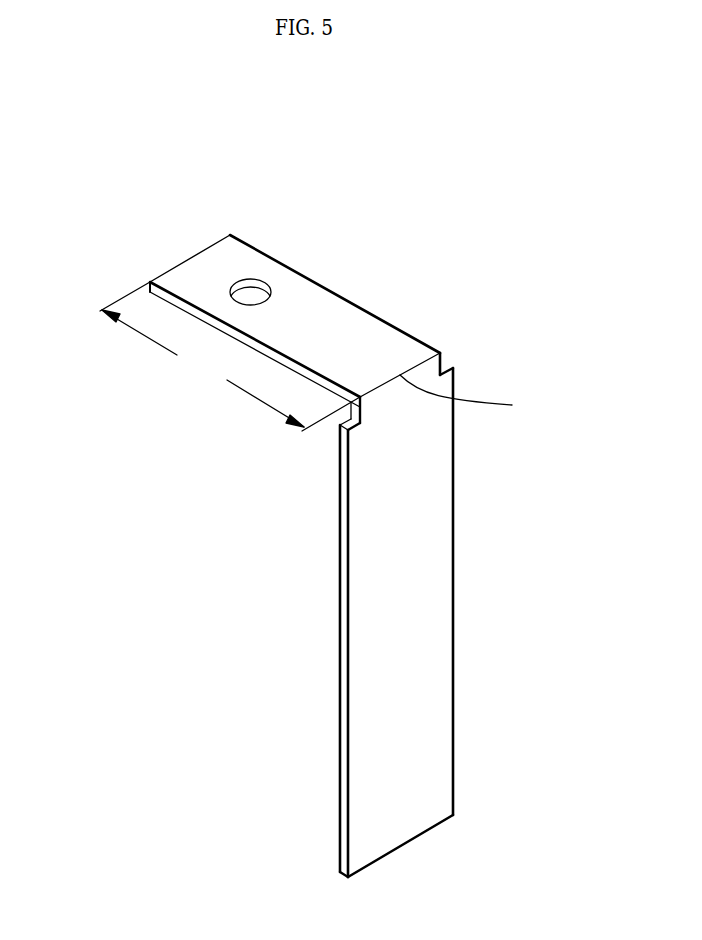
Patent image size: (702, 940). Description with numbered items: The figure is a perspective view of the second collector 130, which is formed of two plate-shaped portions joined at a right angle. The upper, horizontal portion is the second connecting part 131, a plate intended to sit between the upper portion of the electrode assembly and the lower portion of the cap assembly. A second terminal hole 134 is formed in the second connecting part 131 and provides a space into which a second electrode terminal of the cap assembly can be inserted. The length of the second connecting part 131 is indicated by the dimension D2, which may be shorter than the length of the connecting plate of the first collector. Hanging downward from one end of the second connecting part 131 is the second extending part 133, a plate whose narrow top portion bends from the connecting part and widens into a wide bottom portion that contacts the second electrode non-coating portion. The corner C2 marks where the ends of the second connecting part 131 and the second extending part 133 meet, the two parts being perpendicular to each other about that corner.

The second collector 130 is at (135, 235).
The second connecting part 131 is at (355, 318).
The second extending part 133 is at (436, 527).
The second terminal hole 134 is at (257, 296).
The length of the second connecting part D2 is at (230, 356).
The corner of the second collector C2 is at (475, 402).